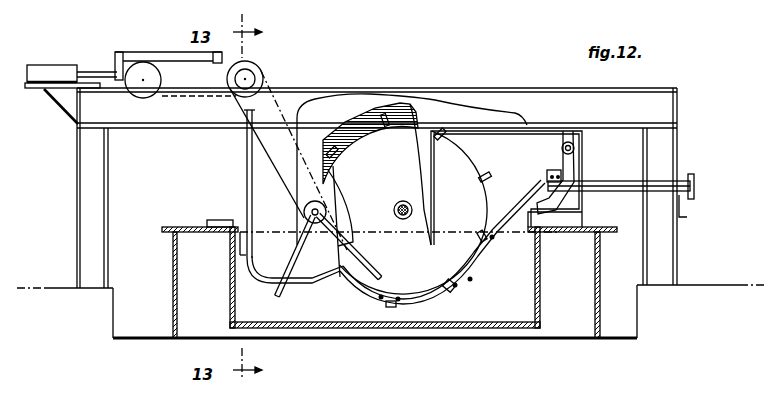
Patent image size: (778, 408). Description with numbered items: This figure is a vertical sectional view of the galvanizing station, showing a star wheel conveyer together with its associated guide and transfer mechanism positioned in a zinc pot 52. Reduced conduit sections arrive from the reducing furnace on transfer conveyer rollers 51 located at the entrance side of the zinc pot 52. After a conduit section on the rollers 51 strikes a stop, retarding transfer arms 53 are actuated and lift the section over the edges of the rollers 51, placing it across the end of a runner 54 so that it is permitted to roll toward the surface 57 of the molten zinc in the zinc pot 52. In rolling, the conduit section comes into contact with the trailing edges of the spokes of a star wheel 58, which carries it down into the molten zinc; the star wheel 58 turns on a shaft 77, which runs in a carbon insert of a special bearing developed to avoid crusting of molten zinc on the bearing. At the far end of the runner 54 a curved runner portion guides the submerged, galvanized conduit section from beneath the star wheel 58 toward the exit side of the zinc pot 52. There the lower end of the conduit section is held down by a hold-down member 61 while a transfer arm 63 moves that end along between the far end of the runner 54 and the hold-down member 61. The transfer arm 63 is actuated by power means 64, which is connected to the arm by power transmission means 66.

The transfer conveyer rollers 51 is at (545, 180).
The zinc pot 52 is at (381, 339).
The retarding transfer arms 53 is at (575, 163).
The runner 54 is at (437, 299).
The surface of the molten zinc 57 is at (501, 226).
The star wheel 58 is at (470, 171).
The hold-down member 61 is at (312, 276).
The transfer arm 63 is at (297, 256).
The power means 64 is at (263, 70).
The power transmission means 66 is at (285, 165).
The shaft 77 is at (396, 206).